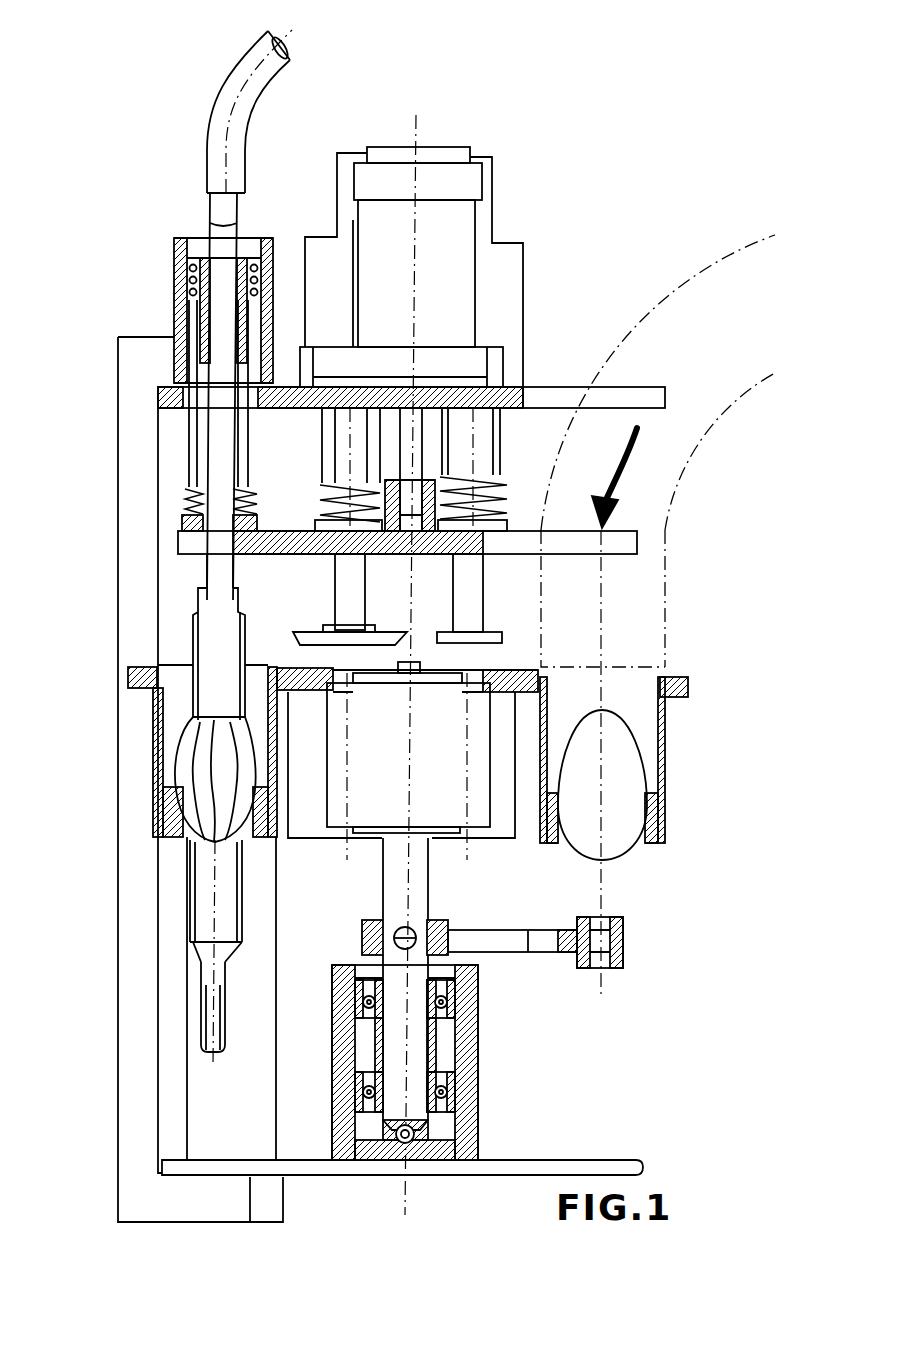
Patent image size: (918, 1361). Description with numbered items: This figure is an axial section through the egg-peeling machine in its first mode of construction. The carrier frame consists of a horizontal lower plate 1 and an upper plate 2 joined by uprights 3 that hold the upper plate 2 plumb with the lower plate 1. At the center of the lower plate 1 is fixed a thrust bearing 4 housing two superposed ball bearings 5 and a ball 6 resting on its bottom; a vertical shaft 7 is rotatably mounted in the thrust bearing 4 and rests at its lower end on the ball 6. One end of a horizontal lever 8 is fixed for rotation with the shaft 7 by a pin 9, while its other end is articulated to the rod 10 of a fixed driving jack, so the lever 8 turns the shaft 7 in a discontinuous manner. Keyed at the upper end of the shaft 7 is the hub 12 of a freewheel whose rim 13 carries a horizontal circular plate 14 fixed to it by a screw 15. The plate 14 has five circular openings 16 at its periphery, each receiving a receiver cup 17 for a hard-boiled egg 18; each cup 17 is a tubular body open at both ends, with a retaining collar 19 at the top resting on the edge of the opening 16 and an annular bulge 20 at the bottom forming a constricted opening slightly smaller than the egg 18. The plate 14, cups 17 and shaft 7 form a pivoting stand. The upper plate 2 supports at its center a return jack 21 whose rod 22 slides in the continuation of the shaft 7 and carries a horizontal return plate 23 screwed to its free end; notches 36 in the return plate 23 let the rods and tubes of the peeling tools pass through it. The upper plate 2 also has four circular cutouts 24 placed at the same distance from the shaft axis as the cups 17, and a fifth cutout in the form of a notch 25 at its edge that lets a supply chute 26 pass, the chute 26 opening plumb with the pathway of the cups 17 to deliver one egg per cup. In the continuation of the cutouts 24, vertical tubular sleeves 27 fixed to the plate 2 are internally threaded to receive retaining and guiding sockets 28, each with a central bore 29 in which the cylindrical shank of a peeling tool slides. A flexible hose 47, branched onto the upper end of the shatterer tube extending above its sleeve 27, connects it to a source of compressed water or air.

The lower plate 1 is at (615, 1170).
The upper plate 2 is at (378, 380).
The uprights 3 is at (135, 1087).
The thrust bearing 4 is at (468, 1048).
The ball bearings 5 is at (455, 1012).
The ball 6 is at (410, 1141).
The vertical support shaft 7 is at (400, 1047).
The horizontal lever 8 is at (500, 930).
The pin 9 is at (402, 927).
The rod 10 is at (623, 962).
The hub 12 is at (443, 830).
The rim 13 is at (445, 793).
The horizontal circular plate 14 is at (686, 688).
The screw 15 is at (477, 680).
The circular openings 16 is at (151, 686).
The receiver cups 17 is at (668, 748).
The hard-boiled eggs 18 is at (630, 795).
The retaining collar 19 is at (671, 668).
The annular bulge 20 is at (662, 828).
The return jack 21 is at (445, 228).
The rod 22 is at (415, 445).
The return plate 23 is at (280, 538).
The circular cutouts 24 is at (205, 392).
The notch 25 is at (623, 400).
The supply chute 26 is at (693, 407).
The vertical tubular sleeves 27 is at (178, 253).
The retaining and guiding sockets 28 is at (210, 327).
The central bore 29 is at (213, 352).
The notch 36 is at (190, 537).
The flexible hose 47 is at (215, 143).